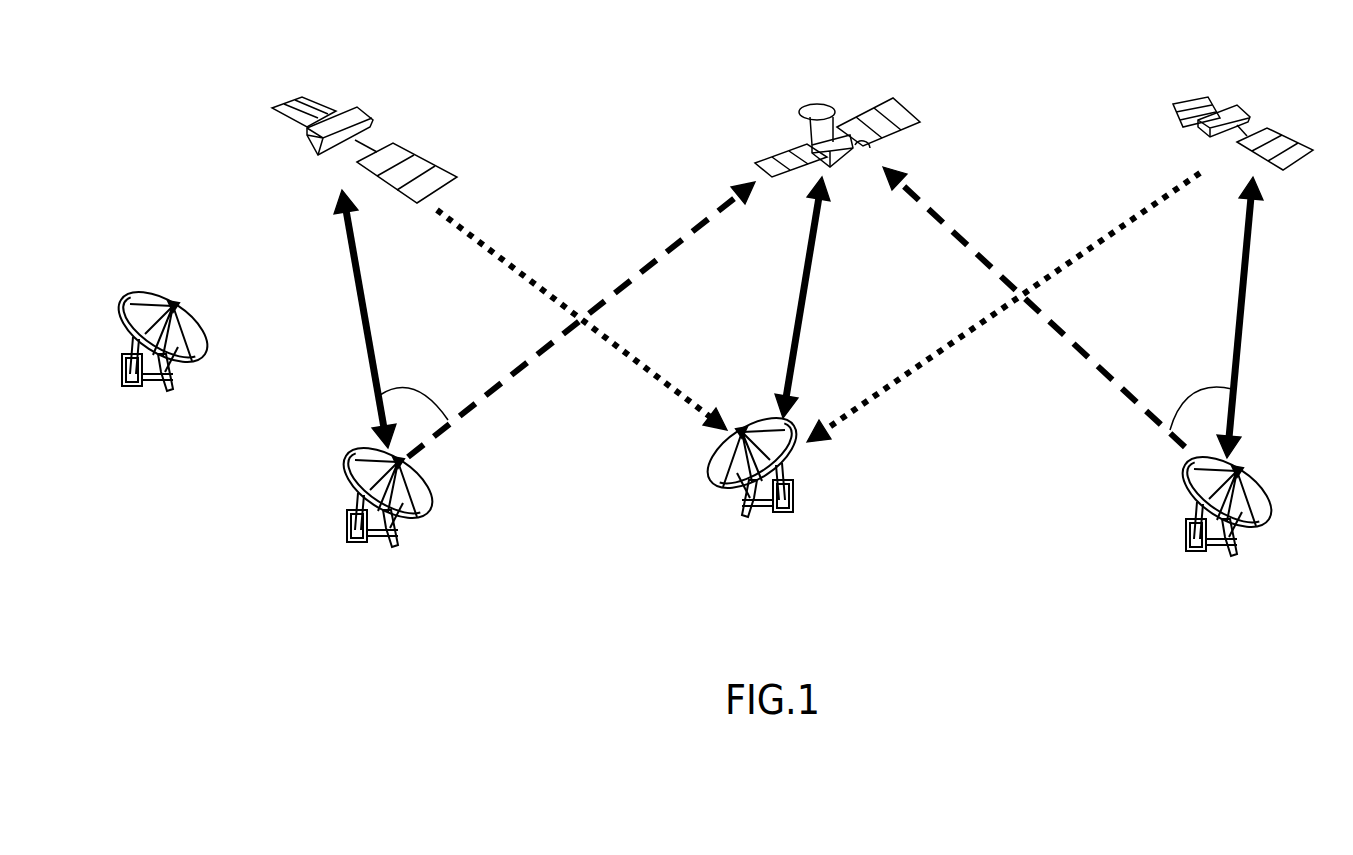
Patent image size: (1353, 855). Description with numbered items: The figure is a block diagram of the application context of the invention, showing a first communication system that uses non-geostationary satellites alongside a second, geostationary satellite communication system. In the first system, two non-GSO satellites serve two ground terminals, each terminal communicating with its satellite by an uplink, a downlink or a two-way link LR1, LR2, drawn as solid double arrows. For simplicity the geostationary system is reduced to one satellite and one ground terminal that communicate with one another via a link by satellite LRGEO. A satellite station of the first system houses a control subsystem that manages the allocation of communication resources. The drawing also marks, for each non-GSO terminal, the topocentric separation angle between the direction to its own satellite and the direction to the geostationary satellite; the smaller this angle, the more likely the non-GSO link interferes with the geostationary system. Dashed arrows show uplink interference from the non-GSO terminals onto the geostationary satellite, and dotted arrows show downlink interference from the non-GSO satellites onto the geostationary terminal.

The two-way link LR2 is at (368, 333).
The link by satellite LRGEO is at (785, 368).
The two-way link LR1 is at (1238, 306).